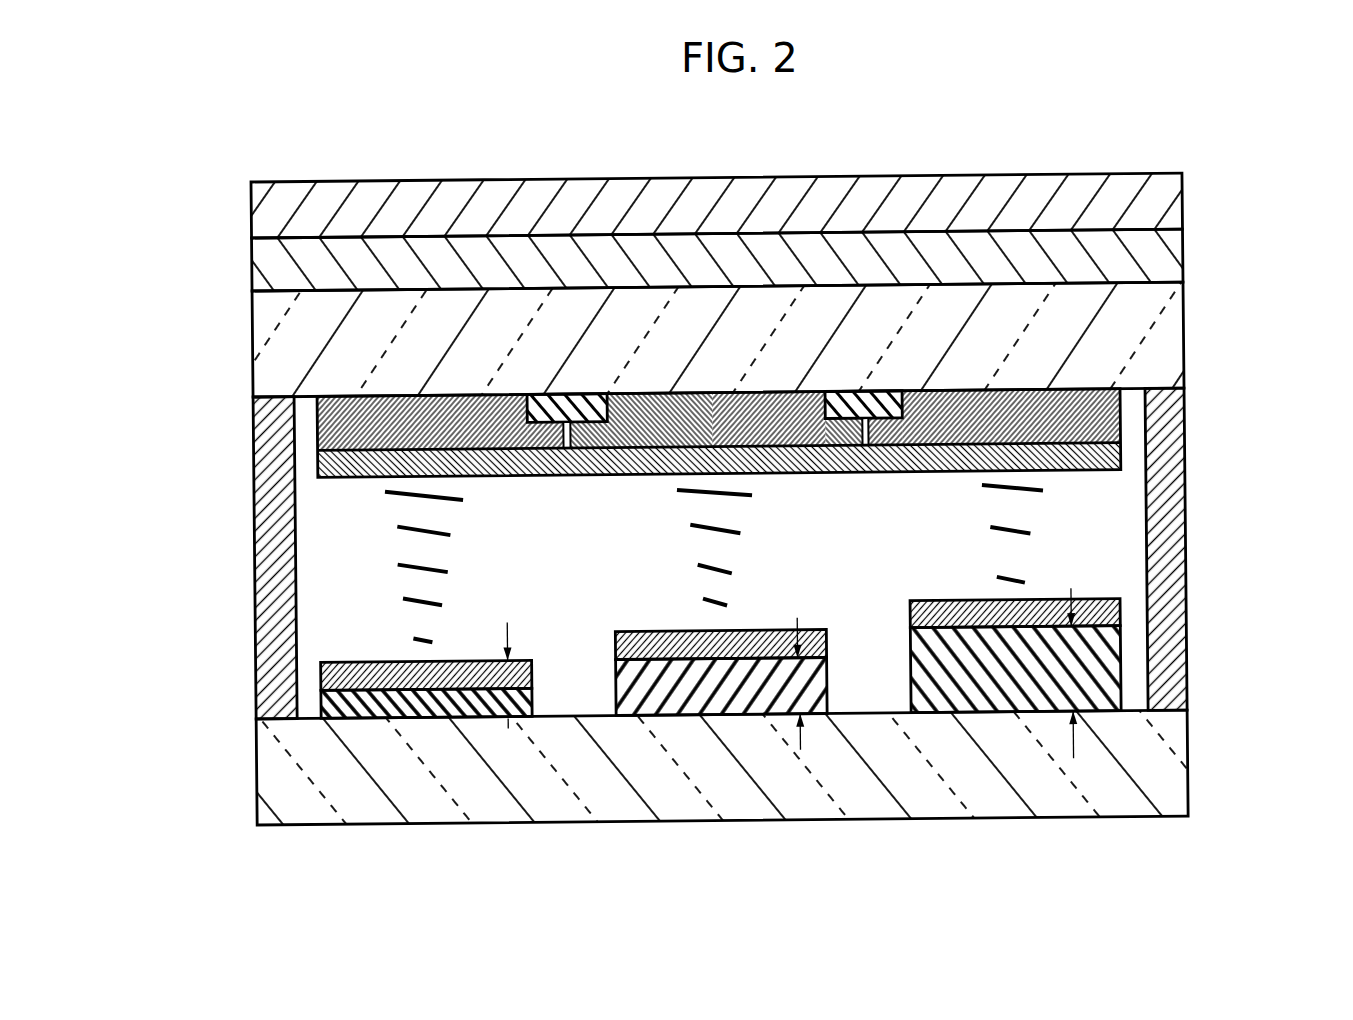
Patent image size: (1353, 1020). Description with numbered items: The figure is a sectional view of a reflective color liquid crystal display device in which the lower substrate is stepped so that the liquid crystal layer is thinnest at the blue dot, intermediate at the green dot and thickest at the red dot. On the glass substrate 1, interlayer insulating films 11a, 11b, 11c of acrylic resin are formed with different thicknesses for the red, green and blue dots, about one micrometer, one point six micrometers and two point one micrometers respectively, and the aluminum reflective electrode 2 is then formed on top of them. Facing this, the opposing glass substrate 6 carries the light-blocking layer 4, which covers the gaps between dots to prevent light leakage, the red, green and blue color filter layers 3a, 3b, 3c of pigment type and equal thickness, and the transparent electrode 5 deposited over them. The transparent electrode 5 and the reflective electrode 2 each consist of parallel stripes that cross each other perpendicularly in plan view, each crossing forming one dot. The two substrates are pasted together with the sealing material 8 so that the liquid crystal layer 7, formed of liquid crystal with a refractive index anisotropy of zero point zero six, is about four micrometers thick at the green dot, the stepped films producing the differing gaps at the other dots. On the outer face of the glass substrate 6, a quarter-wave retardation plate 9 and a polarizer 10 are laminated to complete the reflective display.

The glass substrate 1 is at (1124, 775).
The reflective electrode 2 is at (1086, 620).
The color filter layer 3a is at (315, 423).
The color filter layer 3b is at (706, 399).
The color filter layer 3c is at (1026, 424).
The light-blocking layer 4 is at (555, 408).
The transparent electrode 5 is at (1115, 456).
The glass substrate 6 is at (1135, 346).
The liquid crystal layer 7 is at (1112, 540).
The sealing material 8 is at (274, 608).
The retardation plate 9 is at (1166, 269).
The polarizer 10 is at (1150, 202).
The interlayer insulating film 11a is at (382, 713).
The interlayer insulating film 11b is at (690, 701).
The interlayer insulating film 11c is at (1032, 698).